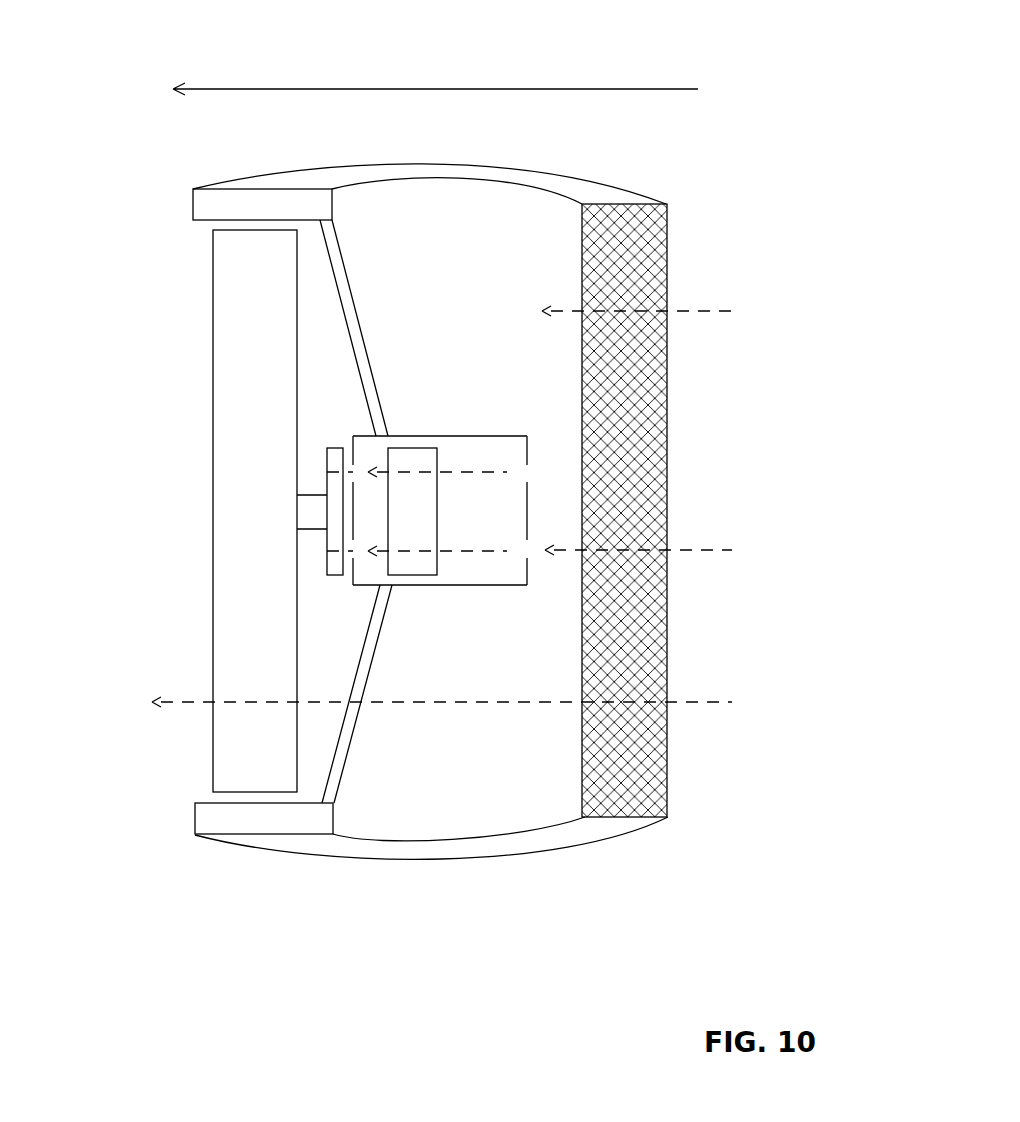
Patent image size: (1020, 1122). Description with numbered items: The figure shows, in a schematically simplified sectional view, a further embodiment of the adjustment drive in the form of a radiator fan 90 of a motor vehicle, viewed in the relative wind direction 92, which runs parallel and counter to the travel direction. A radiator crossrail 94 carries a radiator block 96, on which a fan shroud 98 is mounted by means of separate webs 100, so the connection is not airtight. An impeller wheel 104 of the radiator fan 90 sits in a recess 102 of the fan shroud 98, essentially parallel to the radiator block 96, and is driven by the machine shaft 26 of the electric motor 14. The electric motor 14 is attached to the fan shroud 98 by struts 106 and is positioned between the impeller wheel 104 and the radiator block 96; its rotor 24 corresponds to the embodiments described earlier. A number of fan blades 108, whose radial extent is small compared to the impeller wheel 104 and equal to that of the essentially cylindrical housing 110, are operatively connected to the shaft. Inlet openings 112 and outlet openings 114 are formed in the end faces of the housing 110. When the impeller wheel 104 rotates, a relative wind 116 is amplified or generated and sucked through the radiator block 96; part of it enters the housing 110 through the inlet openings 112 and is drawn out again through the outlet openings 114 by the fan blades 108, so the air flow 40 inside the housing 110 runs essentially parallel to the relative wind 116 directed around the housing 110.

The electric motor 14 is at (465, 573).
The rotor 24 is at (405, 567).
The machine shaft 26 is at (303, 510).
The fluid flow 40 is at (698, 311).
The radiator fan 90 is at (169, 475).
The relative wind direction 92 is at (452, 89).
The radiator crossrail 94 is at (686, 190).
The radiator block 96 is at (653, 413).
The fan shroud 98 is at (208, 817).
The webs 100 is at (550, 172).
The recess 102 is at (183, 250).
The impeller wheel 104 is at (230, 558).
The struts 106 is at (340, 267).
The fan blades 108 is at (333, 535).
The housing 110 is at (502, 580).
The inlet openings 112 is at (520, 472).
The outlet openings 114 is at (323, 473).
The relative wind 116 is at (700, 552).